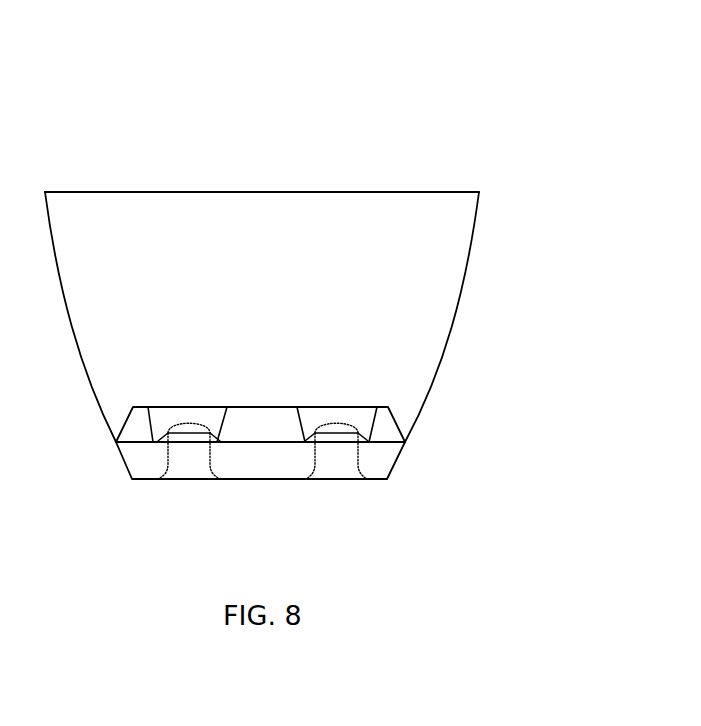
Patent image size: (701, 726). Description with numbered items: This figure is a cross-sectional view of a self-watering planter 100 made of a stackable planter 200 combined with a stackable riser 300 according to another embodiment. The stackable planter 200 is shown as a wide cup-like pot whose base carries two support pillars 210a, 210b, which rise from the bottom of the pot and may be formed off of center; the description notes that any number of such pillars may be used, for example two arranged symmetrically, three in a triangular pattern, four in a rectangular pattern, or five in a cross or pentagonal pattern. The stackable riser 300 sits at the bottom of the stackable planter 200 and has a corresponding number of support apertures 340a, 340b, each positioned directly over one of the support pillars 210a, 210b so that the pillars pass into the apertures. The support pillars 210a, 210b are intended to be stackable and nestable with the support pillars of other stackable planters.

The self-watering planter 100 is at (187, 130).
The stackable planter 200 is at (492, 213).
The stackable riser 300 is at (397, 412).
The support aperture 340a is at (335, 408).
The support aperture 340b is at (187, 408).
The support pillar 210a is at (334, 463).
The support pillar 210b is at (187, 463).